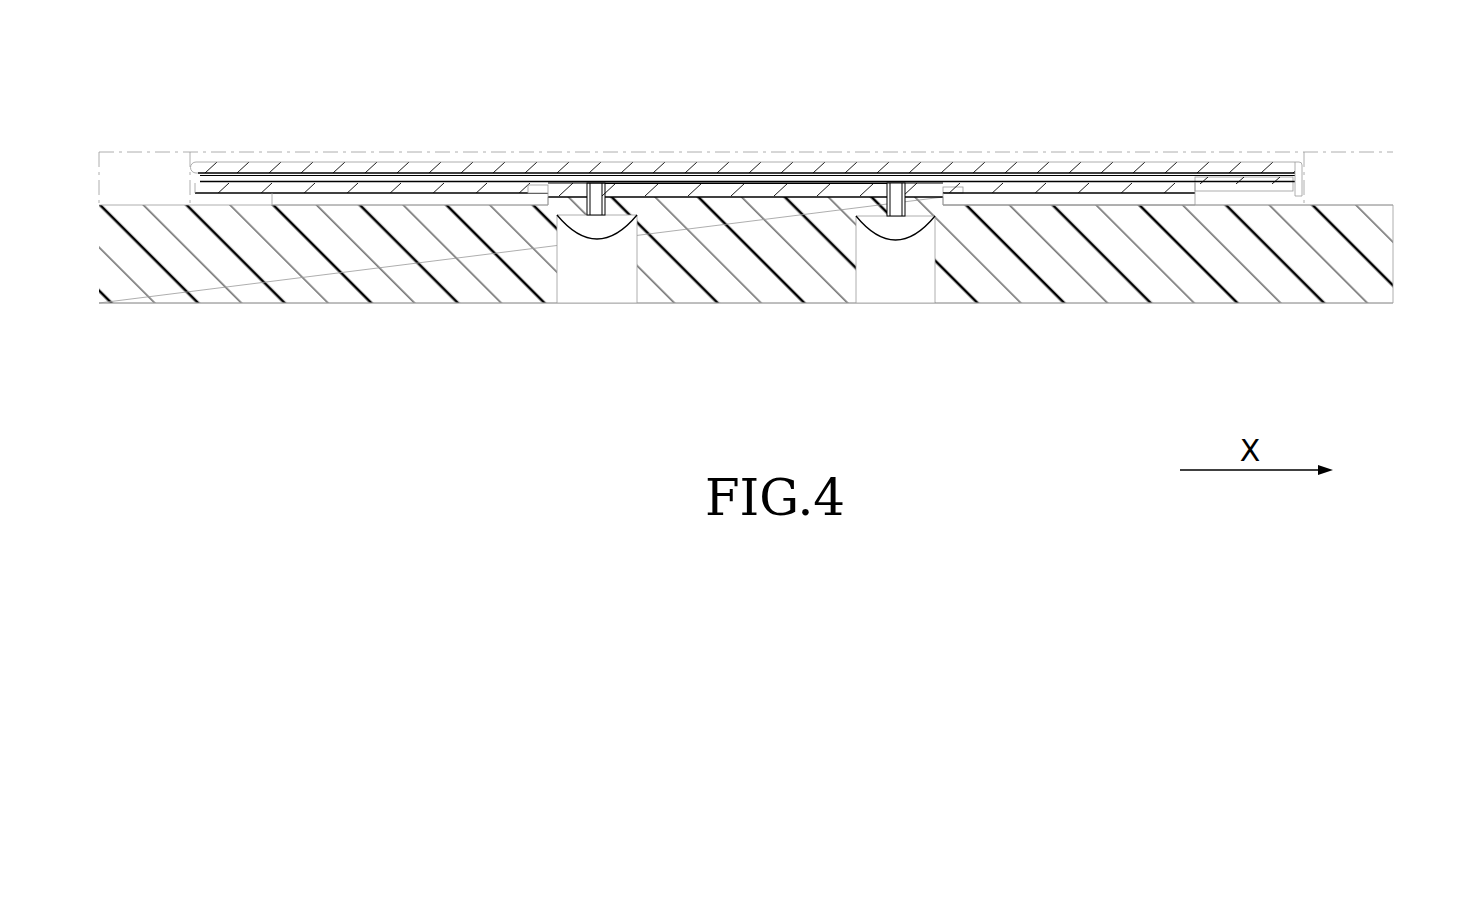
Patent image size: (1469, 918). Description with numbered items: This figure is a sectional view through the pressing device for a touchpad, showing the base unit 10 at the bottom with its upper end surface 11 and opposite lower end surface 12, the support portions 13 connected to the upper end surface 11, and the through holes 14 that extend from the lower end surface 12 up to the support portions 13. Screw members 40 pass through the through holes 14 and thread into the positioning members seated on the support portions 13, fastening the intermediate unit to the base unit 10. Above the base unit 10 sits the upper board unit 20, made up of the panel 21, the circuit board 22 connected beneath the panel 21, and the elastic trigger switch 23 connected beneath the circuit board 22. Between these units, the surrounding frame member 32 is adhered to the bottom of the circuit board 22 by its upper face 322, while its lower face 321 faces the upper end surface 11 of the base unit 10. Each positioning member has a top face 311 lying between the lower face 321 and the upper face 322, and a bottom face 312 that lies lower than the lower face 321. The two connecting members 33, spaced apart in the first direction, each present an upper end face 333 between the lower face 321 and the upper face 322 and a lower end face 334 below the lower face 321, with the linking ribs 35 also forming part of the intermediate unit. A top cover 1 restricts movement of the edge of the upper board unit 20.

The top cover 1 is at (199, 160).
The base unit 10 is at (775, 309).
The upper end surface 11 is at (1342, 203).
The lower end surface 12 is at (1330, 304).
The support portions 13 is at (682, 199).
The through holes 14 is at (893, 275).
The upper board unit 20 is at (747, 115).
The panel 21 is at (1172, 172).
The circuit board 22 is at (928, 178).
The trigger switch 23 is at (740, 180).
The top face 311 is at (812, 188).
The bottom face 312 is at (857, 196).
The surrounding frame member 32 is at (829, 142).
The lower face 321 is at (1300, 194).
The upper face 322 is at (1250, 185).
The connecting members 33 is at (385, 183).
The upper end face 333 is at (1053, 183).
The lower end face 334 is at (1066, 198).
The linking ribs 35 is at (541, 188).
The screw members 40 is at (597, 238).